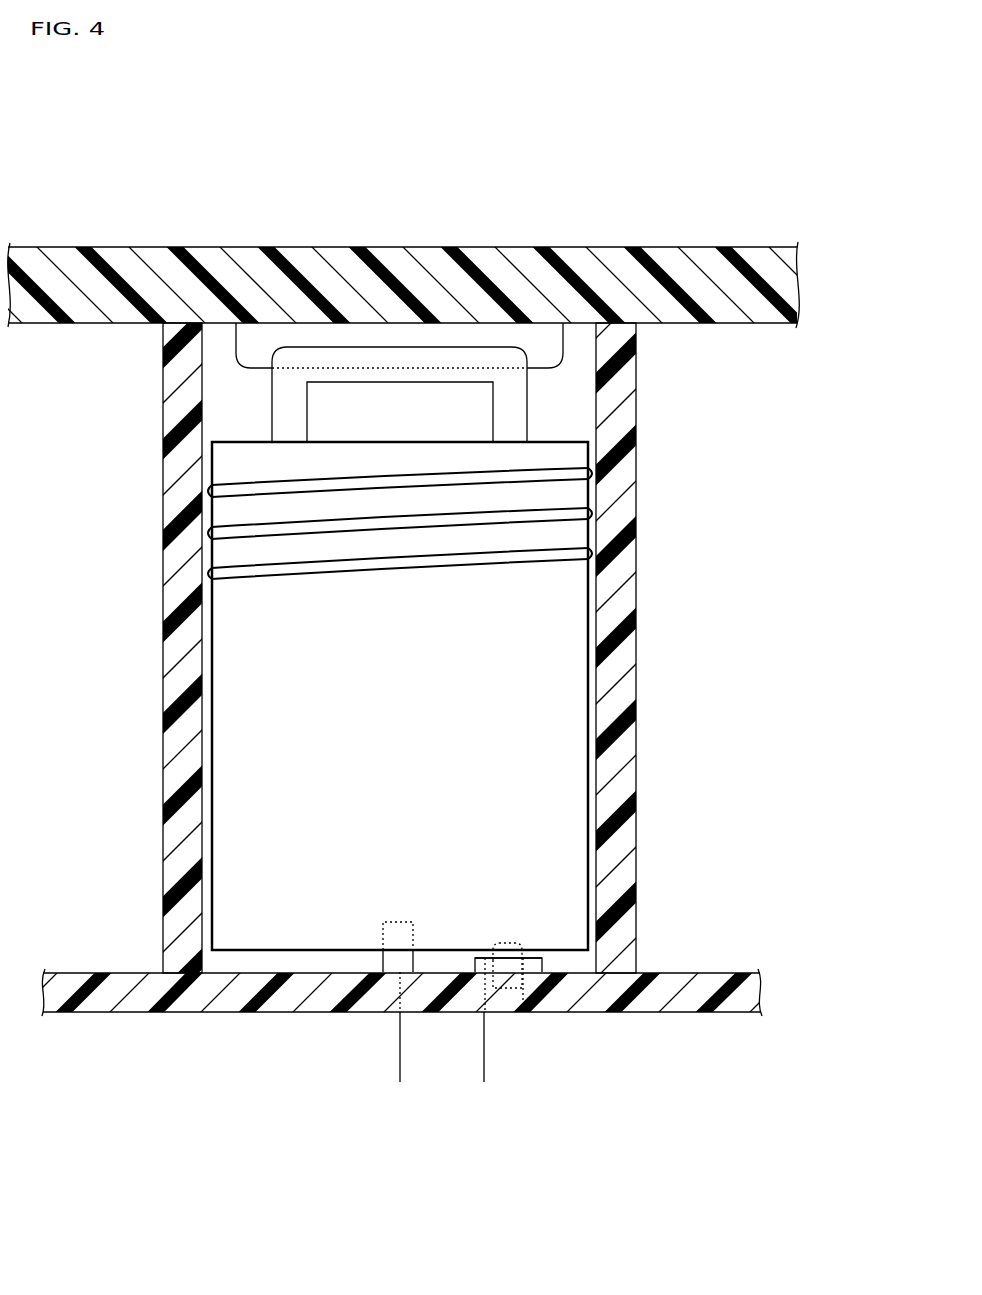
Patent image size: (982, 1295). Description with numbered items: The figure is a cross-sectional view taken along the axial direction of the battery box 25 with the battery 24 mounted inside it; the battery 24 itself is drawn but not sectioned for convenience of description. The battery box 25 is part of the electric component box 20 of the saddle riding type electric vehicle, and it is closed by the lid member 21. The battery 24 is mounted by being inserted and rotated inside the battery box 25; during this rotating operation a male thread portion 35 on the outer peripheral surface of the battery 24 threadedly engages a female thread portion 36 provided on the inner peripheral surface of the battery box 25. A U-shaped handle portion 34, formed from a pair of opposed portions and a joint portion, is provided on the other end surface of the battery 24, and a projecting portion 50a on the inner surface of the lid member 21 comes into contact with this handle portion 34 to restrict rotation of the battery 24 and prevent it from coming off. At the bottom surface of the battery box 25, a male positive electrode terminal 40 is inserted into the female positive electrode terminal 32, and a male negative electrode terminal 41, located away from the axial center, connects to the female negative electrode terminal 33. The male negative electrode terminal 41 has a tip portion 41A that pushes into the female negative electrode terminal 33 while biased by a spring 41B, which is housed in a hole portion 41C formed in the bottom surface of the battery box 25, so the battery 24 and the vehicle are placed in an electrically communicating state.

The electric component box 20 is at (686, 1003).
The lid member 21 is at (118, 258).
The battery 24 is at (600, 683).
The battery box 25 is at (626, 795).
The female positive electrode terminal 32 is at (397, 922).
The female negative electrode terminal 33 is at (512, 946).
The handle portion 34 is at (463, 365).
The male thread portion 35 is at (553, 518).
The female thread portion 36 is at (210, 555).
The male positive electrode terminal 40 is at (392, 975).
The male negative electrode terminal 41 is at (532, 946).
The tip portion 41A is at (495, 958).
The spring 41B is at (490, 1012).
The hole portion 41C is at (515, 975).
The projecting portion 50a is at (565, 345).